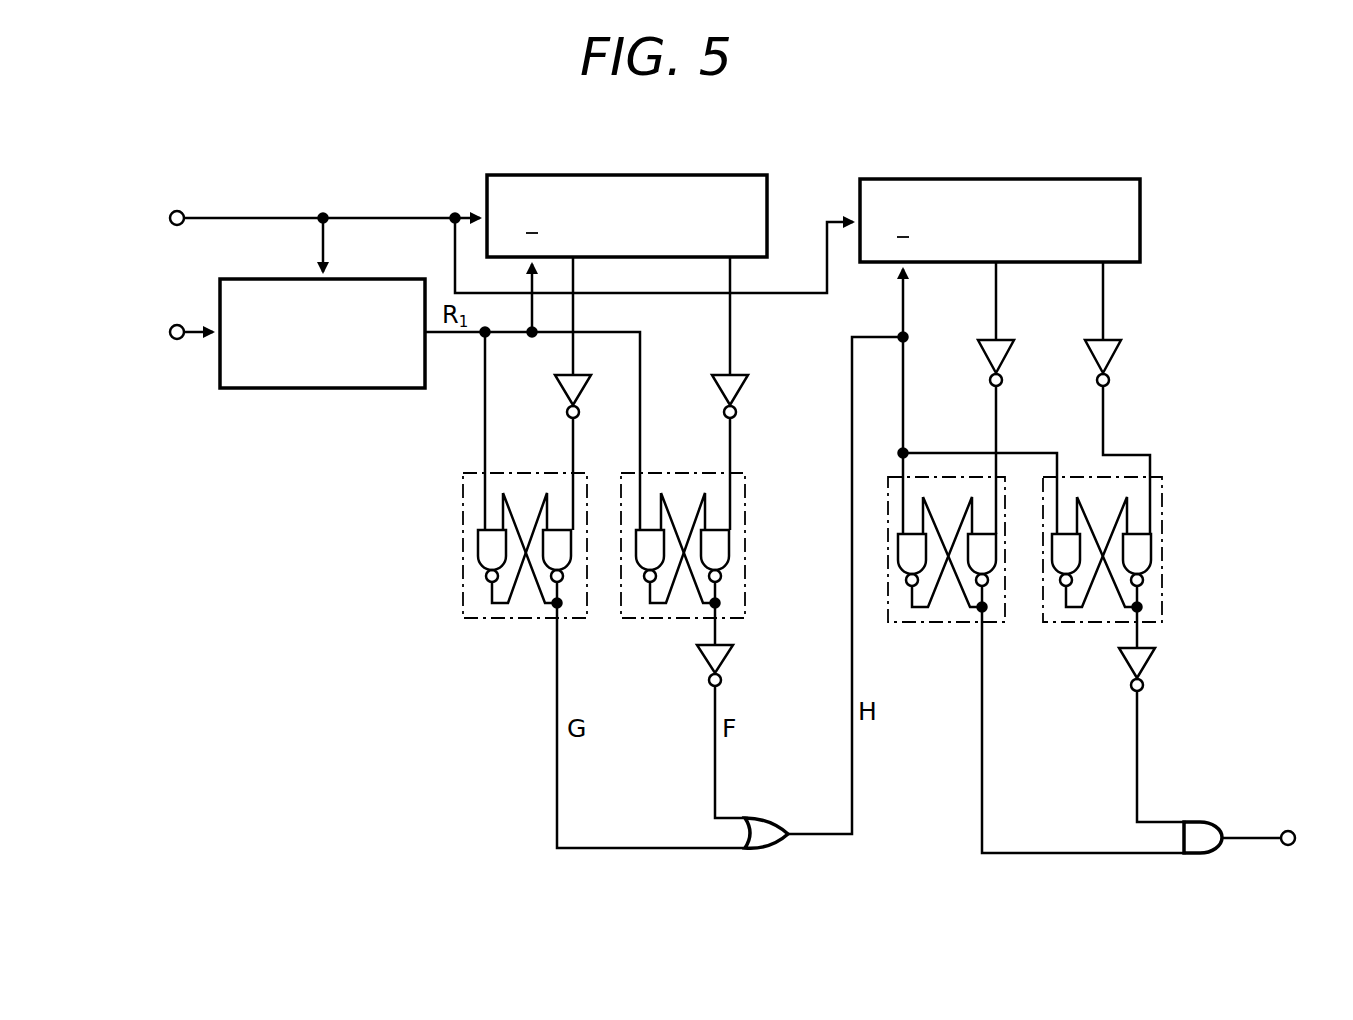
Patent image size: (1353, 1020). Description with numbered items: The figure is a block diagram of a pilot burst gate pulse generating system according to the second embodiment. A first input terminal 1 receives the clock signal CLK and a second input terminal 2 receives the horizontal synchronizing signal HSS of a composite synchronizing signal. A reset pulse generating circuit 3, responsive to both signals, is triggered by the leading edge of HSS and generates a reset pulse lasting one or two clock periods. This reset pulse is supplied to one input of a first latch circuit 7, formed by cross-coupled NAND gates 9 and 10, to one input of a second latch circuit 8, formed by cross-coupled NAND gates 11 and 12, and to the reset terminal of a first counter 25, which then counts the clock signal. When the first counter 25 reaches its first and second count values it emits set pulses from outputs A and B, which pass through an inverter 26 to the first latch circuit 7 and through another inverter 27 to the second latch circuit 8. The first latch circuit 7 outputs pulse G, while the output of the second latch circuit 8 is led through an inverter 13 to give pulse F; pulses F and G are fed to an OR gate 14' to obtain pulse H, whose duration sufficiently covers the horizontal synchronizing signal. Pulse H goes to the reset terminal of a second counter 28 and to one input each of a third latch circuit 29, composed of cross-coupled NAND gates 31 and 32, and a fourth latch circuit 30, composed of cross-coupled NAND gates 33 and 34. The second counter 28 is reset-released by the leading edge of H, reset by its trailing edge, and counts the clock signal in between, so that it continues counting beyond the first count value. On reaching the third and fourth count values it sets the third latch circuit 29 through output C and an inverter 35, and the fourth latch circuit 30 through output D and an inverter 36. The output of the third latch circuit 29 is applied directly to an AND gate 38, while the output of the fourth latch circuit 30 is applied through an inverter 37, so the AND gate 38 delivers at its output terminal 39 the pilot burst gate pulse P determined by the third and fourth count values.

The first input terminal 1 is at (173, 211).
The second input terminal 2 is at (173, 341).
The reset pulse generating circuit 3 is at (398, 279).
The first latch circuit 7 is at (527, 576).
The second latch circuit 8 is at (695, 545).
The NAND gate 9 is at (478, 541).
The NAND gate 10 is at (571, 541).
The NAND gate 11 is at (636, 556).
The NAND gate 12 is at (729, 545).
The inverter 13 is at (731, 668).
The OR gate 14' is at (792, 803).
The first counter 25 is at (767, 185).
The inverter 26 is at (584, 394).
The inverter 27 is at (741, 394).
The second counter 28 is at (1140, 190).
The third latch circuit 29 is at (949, 578).
The fourth latch circuit 30 is at (1121, 527).
The NAND gate 31 is at (903, 546).
The NAND gate 32 is at (990, 547).
The NAND gate 33 is at (1057, 558).
The NAND gate 34 is at (1151, 561).
The inverter 35 is at (1008, 362).
The inverter 36 is at (1116, 362).
The inverter 37 is at (1153, 671).
The AND gate 38 is at (1206, 822).
The output terminal 39 is at (1292, 831).